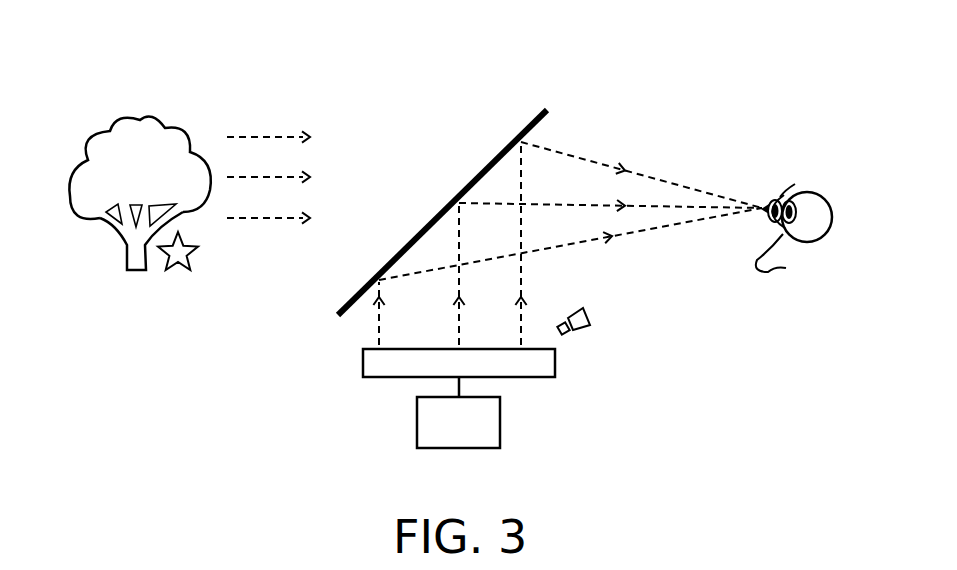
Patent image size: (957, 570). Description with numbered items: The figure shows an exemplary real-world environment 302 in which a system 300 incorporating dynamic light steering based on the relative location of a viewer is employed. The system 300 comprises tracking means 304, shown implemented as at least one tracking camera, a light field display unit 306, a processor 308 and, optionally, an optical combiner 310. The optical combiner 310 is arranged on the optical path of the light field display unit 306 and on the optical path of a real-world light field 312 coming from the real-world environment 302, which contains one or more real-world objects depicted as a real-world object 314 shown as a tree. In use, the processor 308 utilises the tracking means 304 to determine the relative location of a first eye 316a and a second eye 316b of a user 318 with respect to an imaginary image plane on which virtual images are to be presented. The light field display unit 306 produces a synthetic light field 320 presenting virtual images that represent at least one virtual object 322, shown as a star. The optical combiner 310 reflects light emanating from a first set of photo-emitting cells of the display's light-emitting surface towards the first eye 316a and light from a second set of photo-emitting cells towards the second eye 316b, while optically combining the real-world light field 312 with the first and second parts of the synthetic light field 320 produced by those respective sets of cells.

The system 300 is at (346, 80).
The real-world environment 302 is at (113, 104).
The tracking means 304 is at (592, 325).
The light field display unit 306 is at (555, 363).
The processor 308 is at (480, 436).
The optical combiner 310 is at (340, 318).
The real-world light field 312 is at (285, 210).
The real-world object 314 is at (97, 210).
The first eye 316a is at (792, 195).
The second eye 316b is at (822, 232).
The user 318 is at (835, 184).
The synthetic light field 320 is at (580, 150).
The virtual object 322 is at (178, 262).